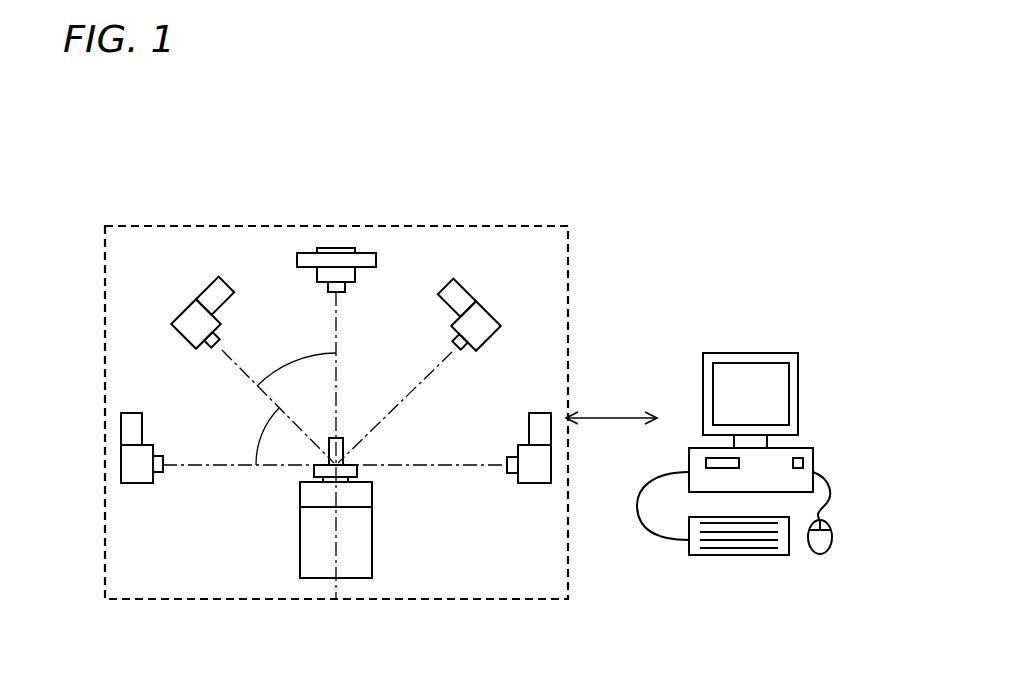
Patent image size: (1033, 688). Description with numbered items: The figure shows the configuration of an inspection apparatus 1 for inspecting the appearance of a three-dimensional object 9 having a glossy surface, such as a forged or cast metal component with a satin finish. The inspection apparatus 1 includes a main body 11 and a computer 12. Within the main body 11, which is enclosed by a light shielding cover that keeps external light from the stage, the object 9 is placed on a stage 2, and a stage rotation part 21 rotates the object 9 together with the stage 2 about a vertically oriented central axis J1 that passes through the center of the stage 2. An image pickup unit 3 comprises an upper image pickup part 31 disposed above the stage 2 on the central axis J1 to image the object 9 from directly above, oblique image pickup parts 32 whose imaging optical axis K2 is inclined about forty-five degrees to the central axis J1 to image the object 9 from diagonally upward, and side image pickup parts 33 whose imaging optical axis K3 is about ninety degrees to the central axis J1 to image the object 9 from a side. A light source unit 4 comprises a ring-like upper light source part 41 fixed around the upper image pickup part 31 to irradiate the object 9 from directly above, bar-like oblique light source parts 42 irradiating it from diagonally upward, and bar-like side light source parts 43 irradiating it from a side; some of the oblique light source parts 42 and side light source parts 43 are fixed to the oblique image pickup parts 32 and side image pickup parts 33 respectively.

The inspection apparatus 1 is at (650, 138).
The stage 2 is at (300, 497).
The stage rotation part 21 is at (300, 545).
The image pickup unit 3 is at (210, 157).
The upper image pickup part 31 is at (336, 270).
The oblique image pickup part 32 is at (197, 312).
The side image pickup part 33 is at (132, 413).
The light source unit 4 is at (462, 160).
The upper light source part 41 is at (360, 262).
The oblique light source part 42 is at (448, 290).
The side light source part 43 is at (540, 423).
The object 9 is at (357, 470).
The main body 11 is at (258, 600).
The computer 12 is at (738, 593).
The central axis J1 is at (340, 587).
The imaging optical axis K2 is at (247, 379).
The imaging optical axis K3 is at (230, 467).